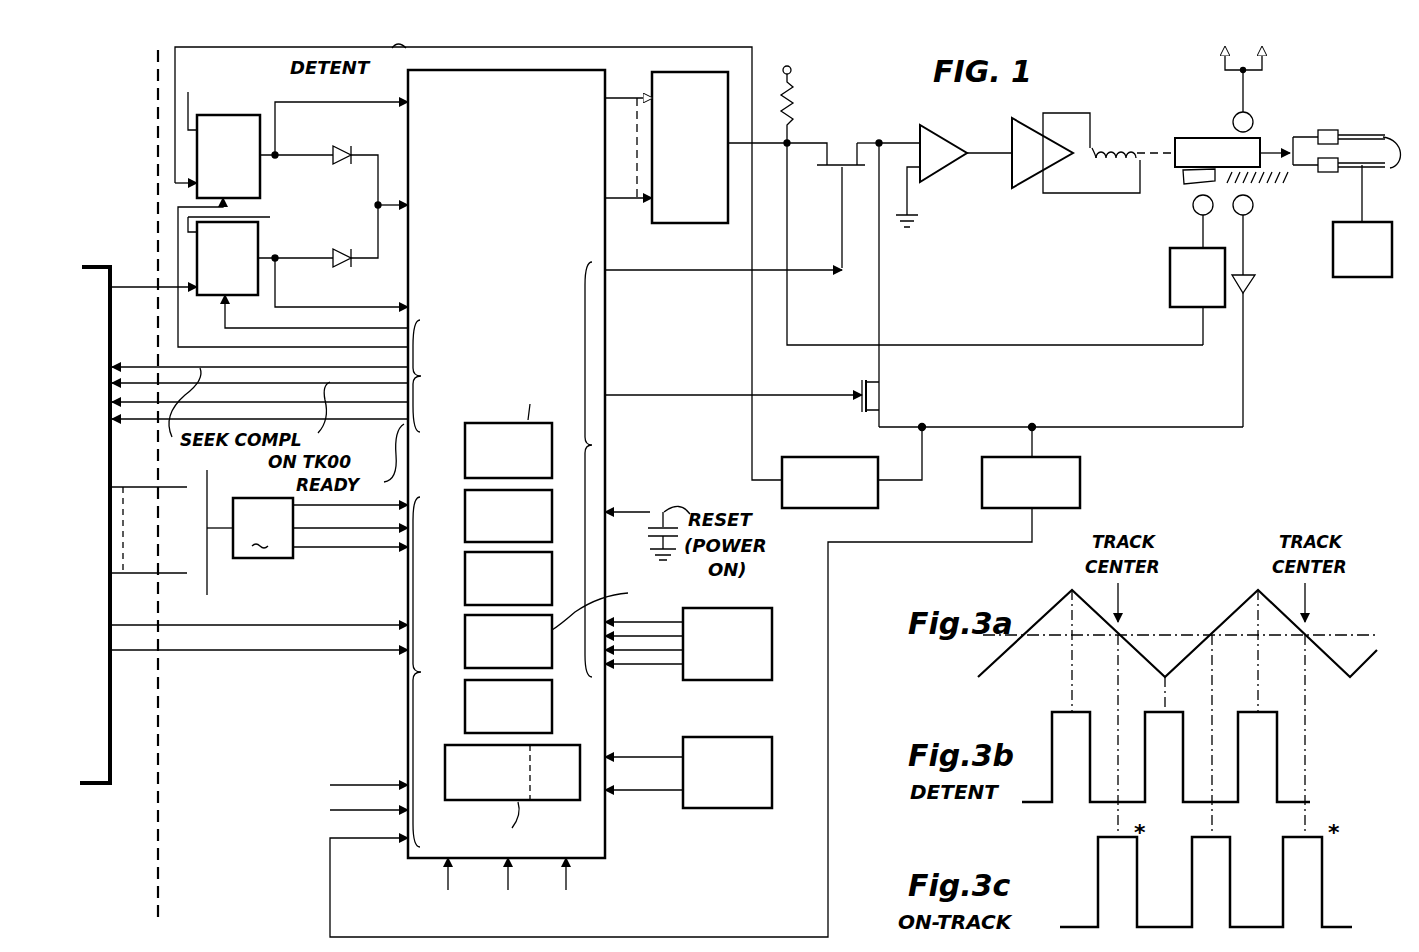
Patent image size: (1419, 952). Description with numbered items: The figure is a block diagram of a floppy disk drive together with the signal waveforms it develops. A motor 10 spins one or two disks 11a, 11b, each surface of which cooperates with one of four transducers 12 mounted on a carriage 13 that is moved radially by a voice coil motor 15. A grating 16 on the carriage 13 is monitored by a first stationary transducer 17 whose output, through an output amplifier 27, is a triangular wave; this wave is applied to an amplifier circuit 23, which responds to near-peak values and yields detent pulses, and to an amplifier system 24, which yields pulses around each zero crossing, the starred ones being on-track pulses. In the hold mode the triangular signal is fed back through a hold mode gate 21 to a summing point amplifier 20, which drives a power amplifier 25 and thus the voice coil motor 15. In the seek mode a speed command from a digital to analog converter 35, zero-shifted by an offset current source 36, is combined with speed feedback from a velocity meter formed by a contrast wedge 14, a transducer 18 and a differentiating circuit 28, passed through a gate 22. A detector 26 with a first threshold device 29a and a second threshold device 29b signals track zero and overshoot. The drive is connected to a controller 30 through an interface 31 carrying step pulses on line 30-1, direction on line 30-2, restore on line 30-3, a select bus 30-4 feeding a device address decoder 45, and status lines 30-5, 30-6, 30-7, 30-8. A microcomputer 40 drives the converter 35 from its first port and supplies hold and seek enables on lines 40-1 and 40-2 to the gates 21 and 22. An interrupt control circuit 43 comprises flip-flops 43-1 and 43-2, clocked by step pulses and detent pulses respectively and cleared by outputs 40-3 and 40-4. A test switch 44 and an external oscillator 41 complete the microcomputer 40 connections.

The motor 10 is at (1362, 272).
The disk 11a is at (1372, 172).
The disk 11b is at (1335, 172).
The transducers 12 is at (1358, 128).
The carriage 13 is at (1275, 128).
The contrast wedge 14 is at (1180, 175).
The voice coil motor 15 is at (1112, 140).
The grating 16 is at (1285, 180).
The first stationary transducer 17 is at (1252, 208).
The transducer 18 is at (1195, 200).
The summing point amplifier 20 is at (940, 130).
The hold mode gate 21 is at (885, 395).
The gate 22 is at (830, 178).
The amplifier circuit 23 is at (822, 444).
The amplifier system 24 is at (1070, 460).
The power amplifier 25 is at (1015, 134).
The detector 26 is at (1250, 108).
The output amplifier 27 is at (1248, 283).
The differentiating circuit 28 is at (1175, 300).
The first threshold device 29a is at (1222, 50).
The second threshold device 29b is at (1281, 44).
The controller 30 is at (80, 264).
The interface line 30-1 is at (127, 292).
The interface line 30-2 is at (190, 623).
The interface line 30-3 is at (190, 660).
The interface bus 30-4 is at (180, 560).
The interface line 30-5 is at (125, 367).
The interface line 30-6 is at (138, 386).
The interface line 30-7 is at (138, 404).
The interface line 30-8 is at (140, 423).
The interface 31 is at (143, 202).
The digital to analog converter 35 is at (712, 100).
The offset current source 36 is at (800, 104).
The microcomputer 40 is at (598, 840).
The port line 40-1 is at (632, 400).
The port line 40-2 is at (636, 282).
The output line 40-3 is at (356, 336).
The output line 40-4 is at (306, 353).
The external oscillator 41 is at (710, 808).
The interrupt control circuit 43 is at (330, 112).
The flip-flop 43-1 is at (246, 285).
The flip-flop 43-2 is at (233, 110).
The switch 44 is at (722, 680).
The select logic device address decoder 45 is at (320, 528).